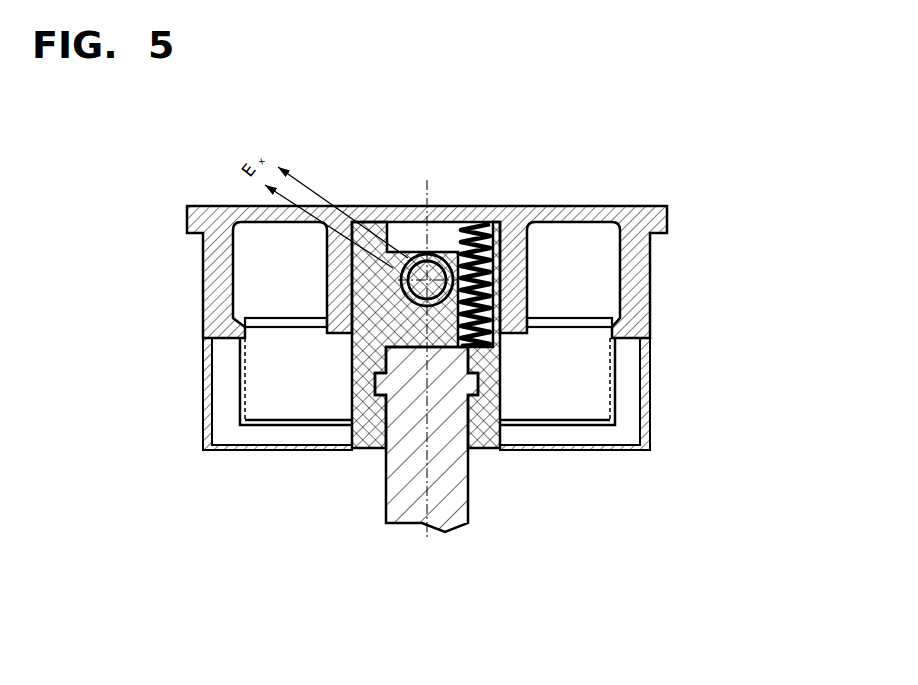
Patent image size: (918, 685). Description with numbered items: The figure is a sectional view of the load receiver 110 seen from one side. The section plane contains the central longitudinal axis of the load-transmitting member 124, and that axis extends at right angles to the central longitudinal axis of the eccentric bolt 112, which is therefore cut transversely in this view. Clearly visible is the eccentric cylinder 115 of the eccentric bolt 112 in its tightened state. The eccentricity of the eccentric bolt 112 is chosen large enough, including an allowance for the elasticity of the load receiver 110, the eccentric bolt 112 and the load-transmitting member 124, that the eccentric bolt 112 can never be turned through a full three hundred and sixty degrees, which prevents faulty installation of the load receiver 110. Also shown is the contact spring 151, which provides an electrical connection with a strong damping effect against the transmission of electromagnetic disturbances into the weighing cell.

The load receiver 110 is at (628, 273).
The eccentric bolt 112 is at (408, 248).
The eccentric cylinder 115 is at (442, 265).
The contact spring 151 is at (495, 278).
The load-transmitting member 124 is at (433, 480).